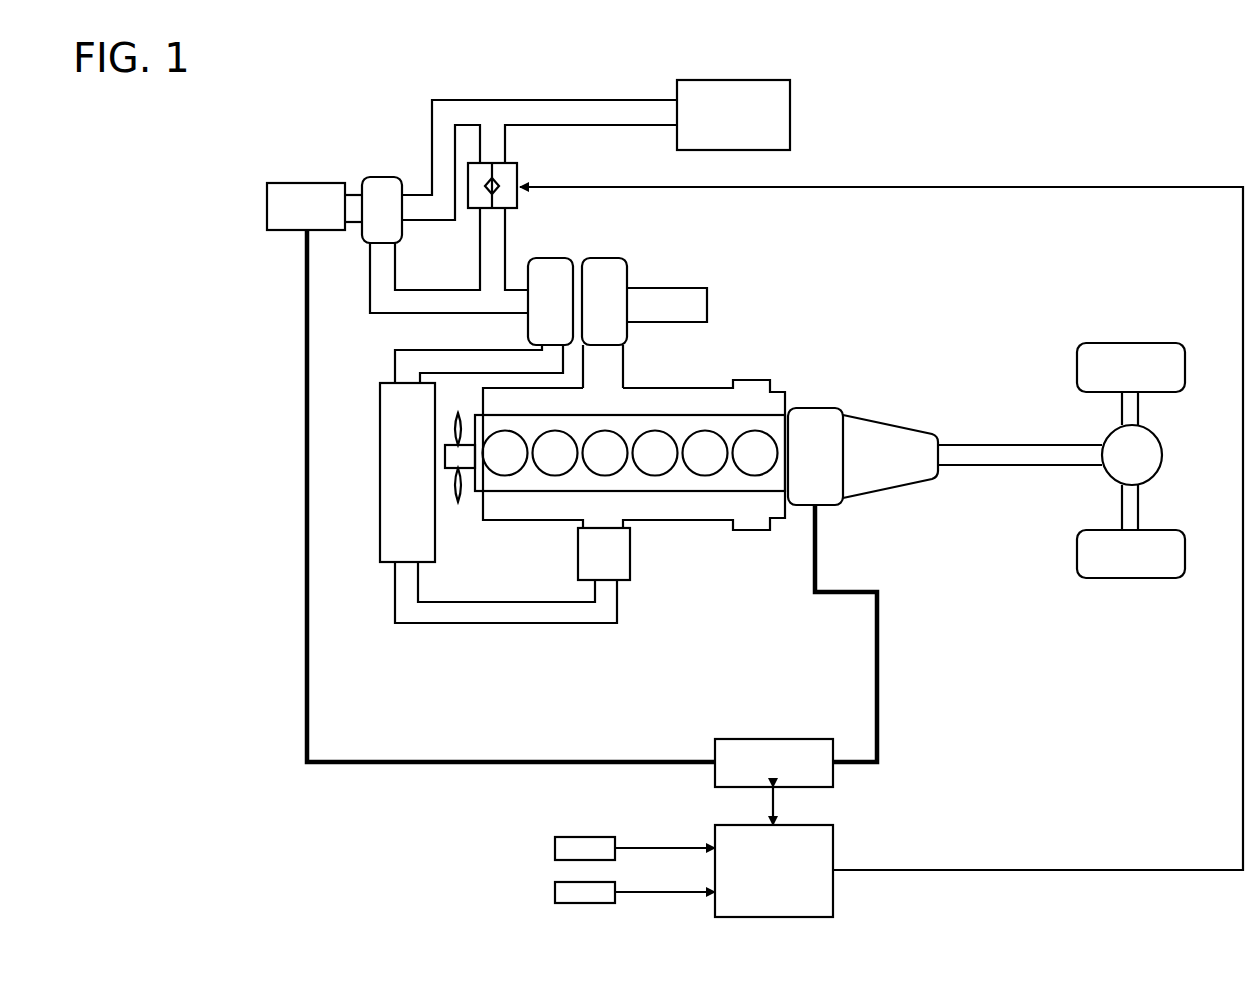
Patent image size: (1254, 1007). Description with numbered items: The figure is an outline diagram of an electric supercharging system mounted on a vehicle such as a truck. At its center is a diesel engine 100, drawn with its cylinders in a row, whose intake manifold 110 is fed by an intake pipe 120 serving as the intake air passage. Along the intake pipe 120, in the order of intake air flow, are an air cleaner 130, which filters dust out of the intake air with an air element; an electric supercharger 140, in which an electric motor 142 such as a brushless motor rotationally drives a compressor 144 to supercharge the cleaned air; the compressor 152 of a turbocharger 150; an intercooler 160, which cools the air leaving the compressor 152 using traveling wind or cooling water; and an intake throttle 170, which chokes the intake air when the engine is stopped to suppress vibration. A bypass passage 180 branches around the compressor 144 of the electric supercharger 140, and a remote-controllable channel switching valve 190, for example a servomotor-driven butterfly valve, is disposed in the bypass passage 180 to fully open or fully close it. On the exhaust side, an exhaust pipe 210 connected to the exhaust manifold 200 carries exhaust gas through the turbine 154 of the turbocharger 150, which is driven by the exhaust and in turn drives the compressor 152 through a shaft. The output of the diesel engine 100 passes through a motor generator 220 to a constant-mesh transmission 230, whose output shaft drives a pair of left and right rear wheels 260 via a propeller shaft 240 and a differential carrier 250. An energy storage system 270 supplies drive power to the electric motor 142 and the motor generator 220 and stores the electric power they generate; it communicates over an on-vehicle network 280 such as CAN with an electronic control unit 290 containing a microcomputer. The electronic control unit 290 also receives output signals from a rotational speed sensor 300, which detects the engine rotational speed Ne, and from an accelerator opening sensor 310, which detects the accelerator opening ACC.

The diesel engine 100 is at (750, 485).
The intake manifold 110 is at (697, 522).
The intake pipe 120 is at (368, 308).
The air cleaner 130 is at (790, 90).
The electric supercharger 140 is at (307, 178).
The electric motor 142 is at (290, 233).
The compressor 144 is at (382, 176).
The turbocharger 150 is at (619, 274).
The compressor 152 is at (552, 257).
The turbine 154 is at (602, 257).
The intercooler 160 is at (380, 468).
The intake throttle 170 is at (578, 560).
The bypass passage 180 is at (473, 268).
The channel switching valve 190 is at (518, 172).
The exhaust manifold 200 is at (617, 448).
The exhaust pipe 210 is at (667, 325).
The motor generator 220 is at (815, 405).
The transmission 230 is at (875, 420).
The propeller shaft 240 is at (995, 443).
The differential carrier 250 is at (1160, 440).
The rear wheels 260 is at (1160, 343).
The energy storage system 270 is at (773, 739).
The on-vehicle network 280 is at (778, 803).
The electronic control unit 290 is at (833, 893).
The rotational speed sensor 300 is at (555, 845).
The accelerator opening sensor 310 is at (555, 887).